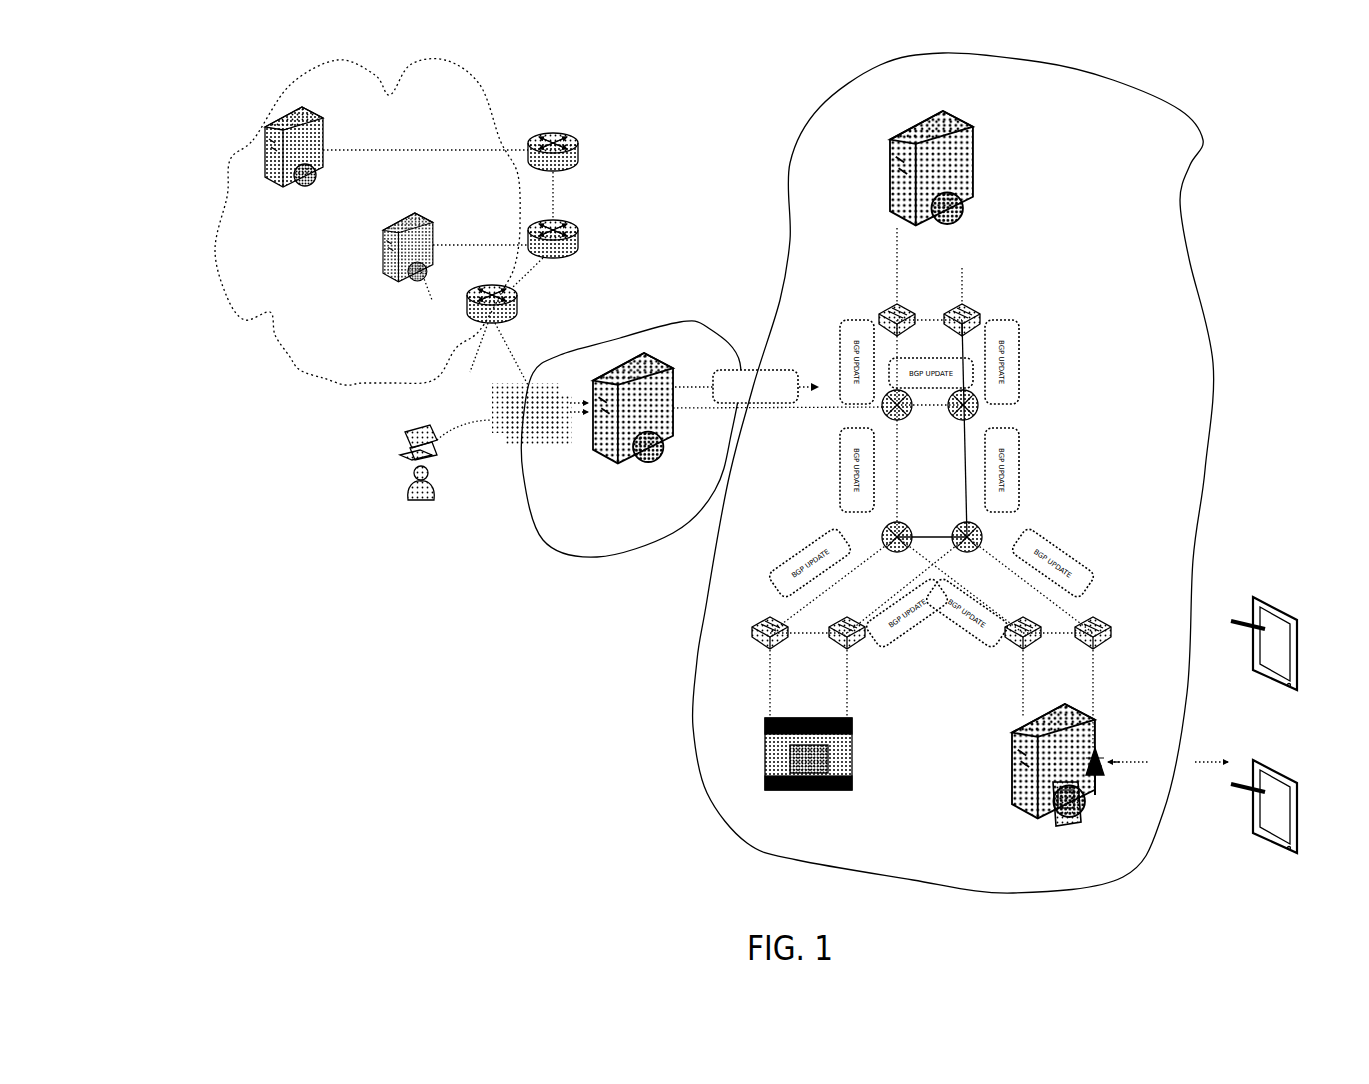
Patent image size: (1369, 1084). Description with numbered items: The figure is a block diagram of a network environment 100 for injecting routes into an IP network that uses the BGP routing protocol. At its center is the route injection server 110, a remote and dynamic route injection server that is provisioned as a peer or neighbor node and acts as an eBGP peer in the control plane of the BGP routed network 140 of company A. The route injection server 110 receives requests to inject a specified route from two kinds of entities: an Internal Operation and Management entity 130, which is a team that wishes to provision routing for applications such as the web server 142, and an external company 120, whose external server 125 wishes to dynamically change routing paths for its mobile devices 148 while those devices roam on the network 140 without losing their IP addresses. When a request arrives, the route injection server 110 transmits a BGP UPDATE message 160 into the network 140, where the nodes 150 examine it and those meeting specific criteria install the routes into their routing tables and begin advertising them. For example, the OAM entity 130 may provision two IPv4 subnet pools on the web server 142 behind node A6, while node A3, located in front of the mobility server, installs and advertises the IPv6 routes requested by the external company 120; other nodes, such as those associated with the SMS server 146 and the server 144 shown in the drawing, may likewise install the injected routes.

The network environment 100 is at (176, 149).
The route injection server 110 is at (680, 322).
The external company 120 is at (492, 112).
The external server 125 is at (425, 246).
The Internal Operation and Management (OAM) entity 130 is at (440, 530).
The BGP routed network 140 is at (1193, 160).
The web server 142 is at (973, 167).
The SMS server 144 is at (857, 754).
The SMS server 146 is at (1093, 750).
The mobile devices 148 is at (1293, 642).
The nodes 150 is at (1004, 532).
The BGP UPDATE message 160 is at (766, 410).
The node A6 is at (978, 320).
The node A3 is at (1008, 648).